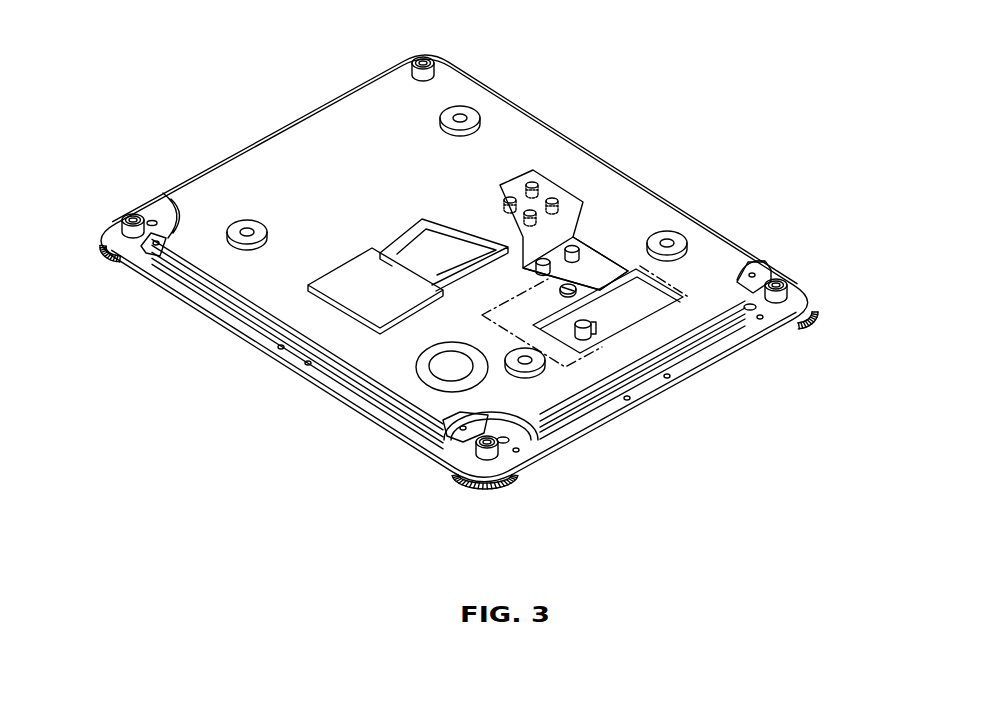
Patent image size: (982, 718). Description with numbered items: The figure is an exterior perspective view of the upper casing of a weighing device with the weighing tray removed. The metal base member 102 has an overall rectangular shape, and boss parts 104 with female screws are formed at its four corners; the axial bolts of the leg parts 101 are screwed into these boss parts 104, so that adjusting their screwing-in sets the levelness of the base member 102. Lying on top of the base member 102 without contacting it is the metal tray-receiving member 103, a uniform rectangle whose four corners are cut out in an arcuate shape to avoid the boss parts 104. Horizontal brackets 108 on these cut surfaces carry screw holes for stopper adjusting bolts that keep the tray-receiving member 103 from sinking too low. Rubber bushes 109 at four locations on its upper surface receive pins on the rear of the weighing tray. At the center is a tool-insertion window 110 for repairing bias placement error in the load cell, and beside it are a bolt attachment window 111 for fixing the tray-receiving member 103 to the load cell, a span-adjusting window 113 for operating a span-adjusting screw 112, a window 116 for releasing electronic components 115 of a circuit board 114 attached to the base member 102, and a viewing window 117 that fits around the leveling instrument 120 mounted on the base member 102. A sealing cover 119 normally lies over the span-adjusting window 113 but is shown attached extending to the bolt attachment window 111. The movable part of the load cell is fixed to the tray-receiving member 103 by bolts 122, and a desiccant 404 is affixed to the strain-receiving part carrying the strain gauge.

The leg parts 101 is at (100, 256).
The base member 102 is at (261, 364).
The tray-receiving member 103 is at (290, 140).
The boss parts 104 is at (420, 57).
The brackets 108 is at (150, 246).
The rubber bushes 109 is at (470, 110).
The tool-insertion window 110 is at (445, 216).
The bolt attachment window 111 is at (513, 183).
The span-adjusting screw 112 is at (637, 289).
The span-adjusting window 113 is at (596, 245).
The circuit board 114 is at (632, 318).
The electronic components 115 is at (590, 340).
The window 116 is at (713, 310).
The viewing window 117 is at (410, 358).
The sealing cover 119 is at (577, 245).
The leveling instrument 120 is at (440, 361).
The bolts 122 is at (558, 203).
The desiccant 404 is at (432, 262).